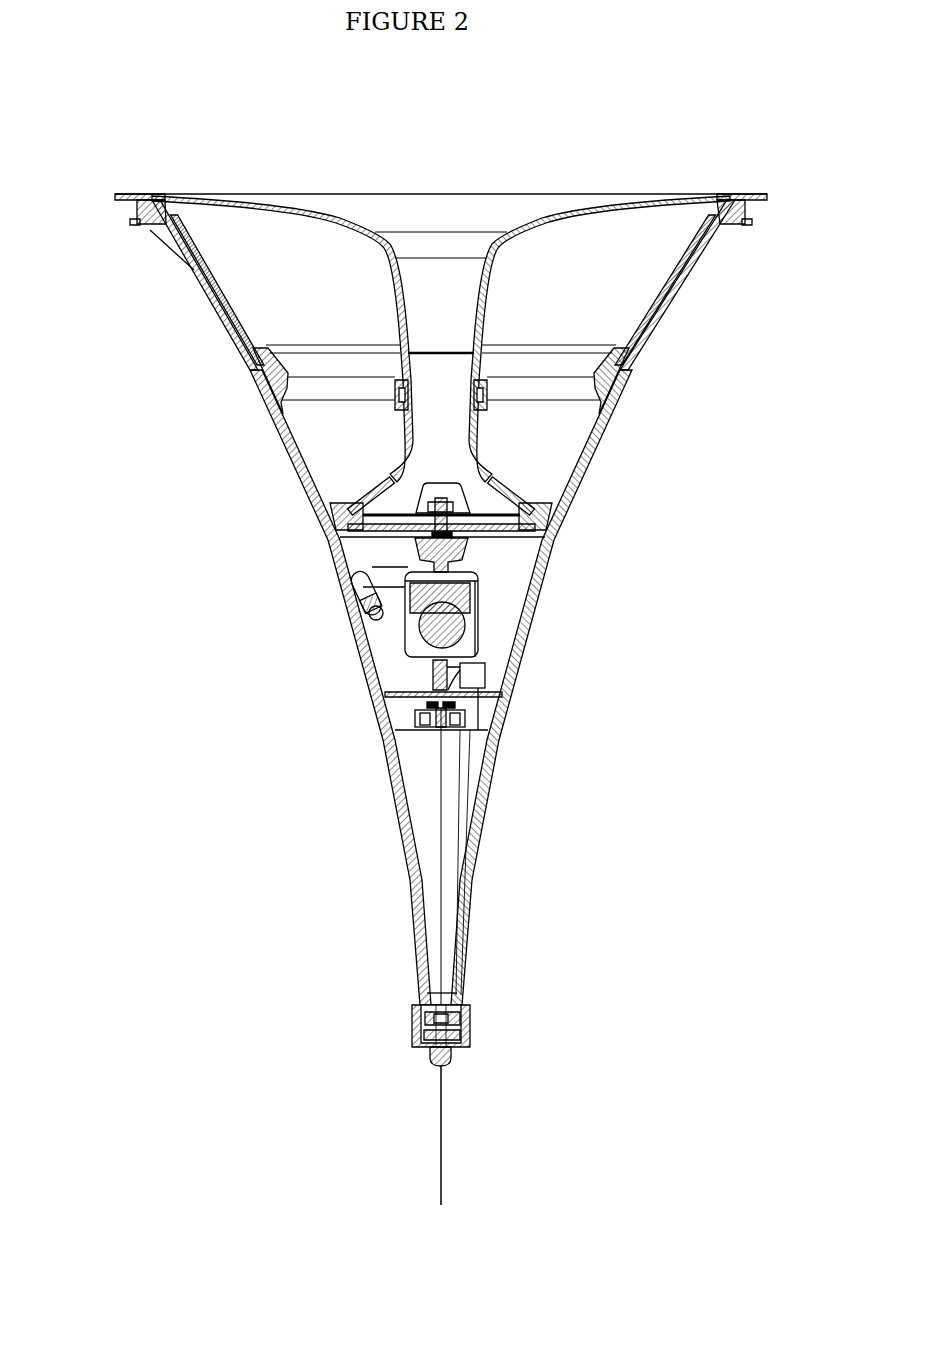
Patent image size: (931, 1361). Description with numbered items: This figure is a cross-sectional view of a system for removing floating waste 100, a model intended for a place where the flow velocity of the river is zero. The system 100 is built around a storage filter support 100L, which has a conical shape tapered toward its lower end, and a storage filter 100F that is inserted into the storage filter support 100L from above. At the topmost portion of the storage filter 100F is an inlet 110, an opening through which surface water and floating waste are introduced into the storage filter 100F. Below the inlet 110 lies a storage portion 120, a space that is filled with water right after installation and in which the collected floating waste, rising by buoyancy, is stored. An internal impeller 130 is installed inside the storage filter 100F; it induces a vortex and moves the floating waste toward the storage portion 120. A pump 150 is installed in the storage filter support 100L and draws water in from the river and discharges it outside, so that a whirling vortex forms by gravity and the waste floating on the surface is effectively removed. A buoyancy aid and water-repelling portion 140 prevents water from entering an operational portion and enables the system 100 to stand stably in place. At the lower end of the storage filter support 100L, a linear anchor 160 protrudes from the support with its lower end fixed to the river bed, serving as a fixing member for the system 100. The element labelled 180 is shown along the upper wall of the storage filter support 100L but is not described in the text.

The system for removing floating waste 100 is at (171, 97).
The inlet 110 is at (438, 240).
The storage filter 100F is at (620, 258).
The storage filter support 100L is at (283, 431).
The storage portion 120 is at (546, 349).
The internal impeller 130 is at (460, 487).
The buoyancy aid and water-repelling portion 140 is at (487, 556).
The pump 150 is at (455, 600).
The linear anchor 160 is at (442, 1096).
The heat radiating member 180 is at (182, 268).